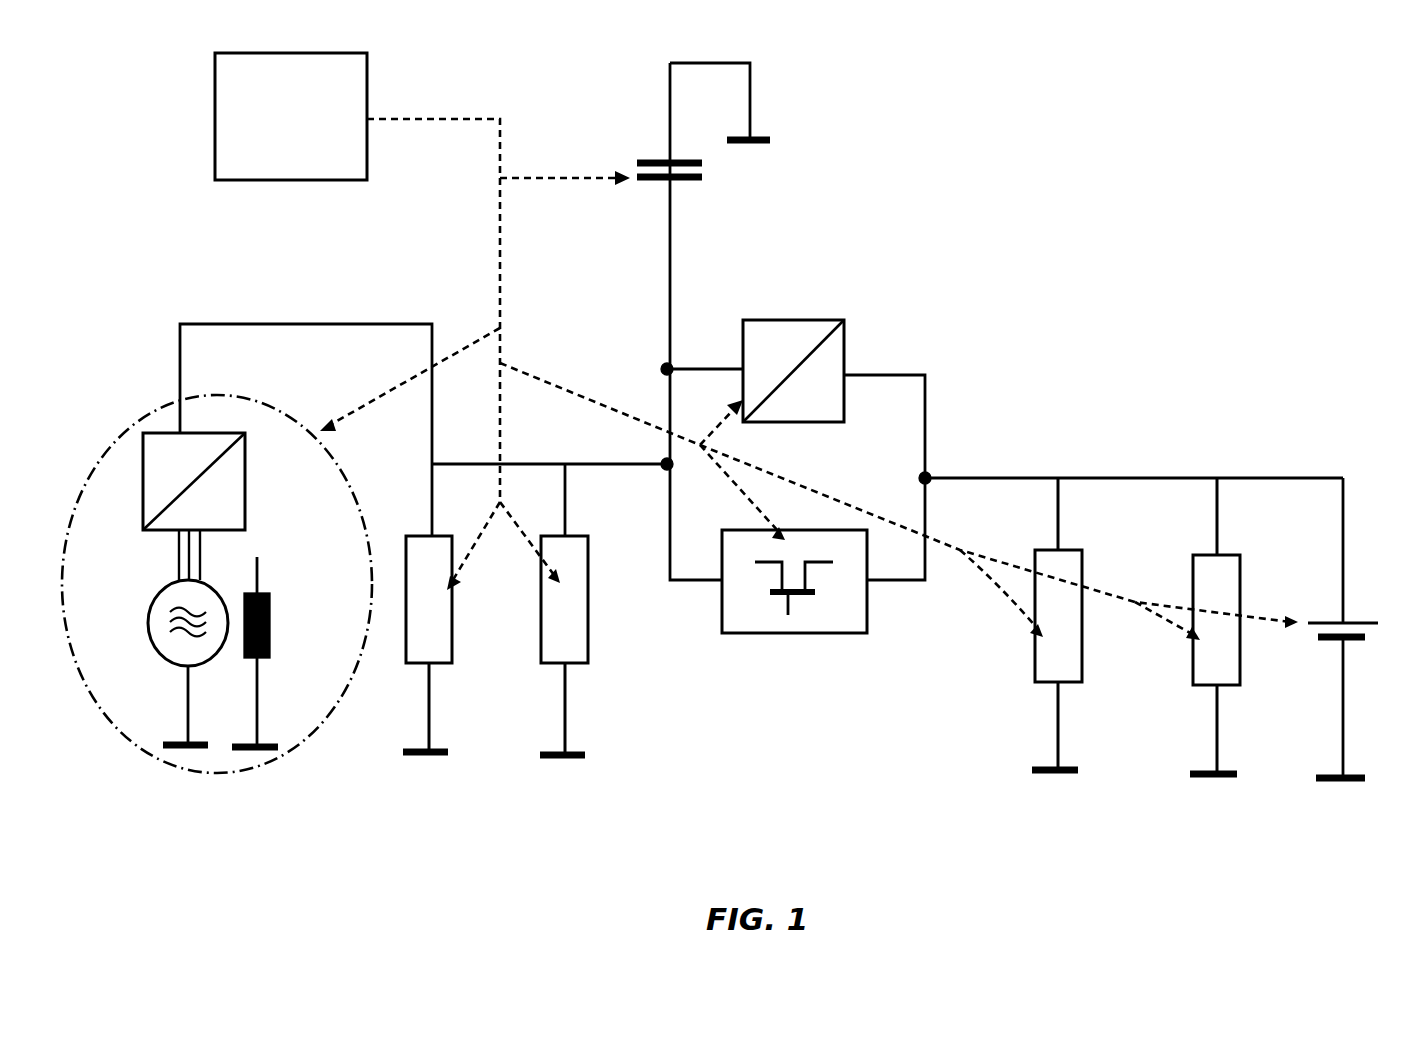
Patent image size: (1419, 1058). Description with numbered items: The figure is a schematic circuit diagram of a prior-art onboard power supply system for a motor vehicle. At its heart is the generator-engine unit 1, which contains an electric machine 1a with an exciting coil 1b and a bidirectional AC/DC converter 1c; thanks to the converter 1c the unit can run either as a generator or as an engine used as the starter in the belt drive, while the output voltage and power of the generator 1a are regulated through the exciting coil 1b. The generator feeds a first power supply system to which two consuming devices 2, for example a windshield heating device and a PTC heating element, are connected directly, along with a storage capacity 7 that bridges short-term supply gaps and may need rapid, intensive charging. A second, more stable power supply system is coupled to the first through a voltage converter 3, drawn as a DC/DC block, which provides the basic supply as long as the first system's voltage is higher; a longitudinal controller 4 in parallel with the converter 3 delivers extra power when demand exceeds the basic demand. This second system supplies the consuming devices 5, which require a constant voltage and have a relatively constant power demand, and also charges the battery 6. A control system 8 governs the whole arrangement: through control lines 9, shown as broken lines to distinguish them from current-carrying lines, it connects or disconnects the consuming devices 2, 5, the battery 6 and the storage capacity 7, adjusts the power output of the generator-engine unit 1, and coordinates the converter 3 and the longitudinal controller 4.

The generator-engine unit 1 is at (138, 422).
The electric machine 1a is at (165, 604).
The exciting coil 1b is at (270, 610).
The bidirectional AC/DC converter 1c is at (143, 500).
The consuming devices 2 is at (443, 640).
The voltage converter 3 is at (850, 332).
The longitudinal controller 4 is at (815, 636).
The consuming devices 5 is at (1035, 664).
The battery 6 is at (1362, 608).
The storage capacity 7 is at (708, 165).
The control system 8 is at (370, 67).
The control lines 9 is at (499, 207).